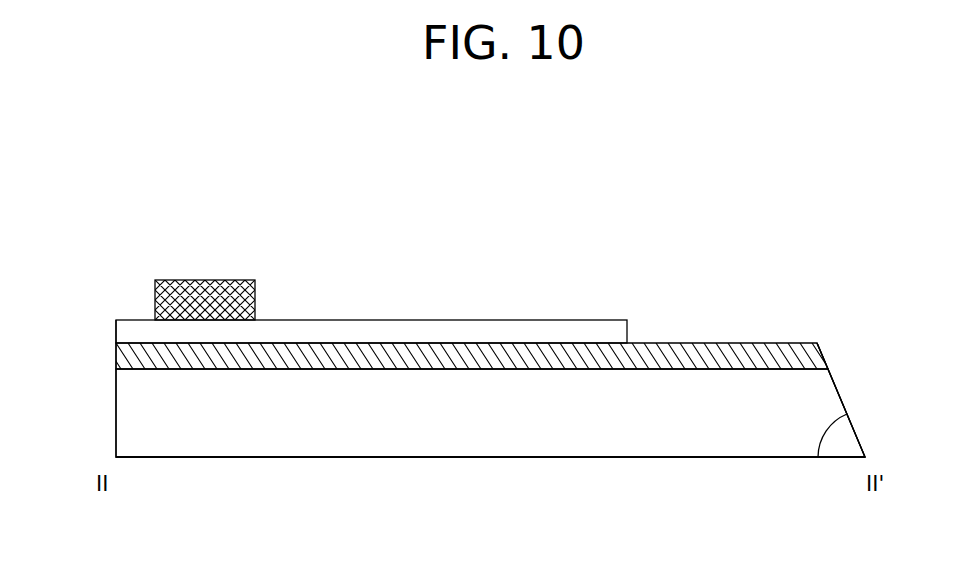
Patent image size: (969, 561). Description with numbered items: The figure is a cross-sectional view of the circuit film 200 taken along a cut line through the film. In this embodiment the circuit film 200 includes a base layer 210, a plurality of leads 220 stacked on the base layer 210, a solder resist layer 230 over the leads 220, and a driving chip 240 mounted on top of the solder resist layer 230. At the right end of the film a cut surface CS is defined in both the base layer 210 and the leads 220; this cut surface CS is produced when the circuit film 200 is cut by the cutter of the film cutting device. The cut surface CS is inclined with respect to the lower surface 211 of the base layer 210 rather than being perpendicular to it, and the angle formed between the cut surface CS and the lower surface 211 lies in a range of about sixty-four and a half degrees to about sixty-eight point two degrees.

The circuit film 200 is at (640, 248).
The base layer 210 is at (122, 413).
The lower surface 211 is at (488, 457).
The leads 220 is at (122, 357).
The solder resist layer 230 is at (122, 329).
The driving chip 240 is at (154, 295).
The cut surface CS is at (837, 392).